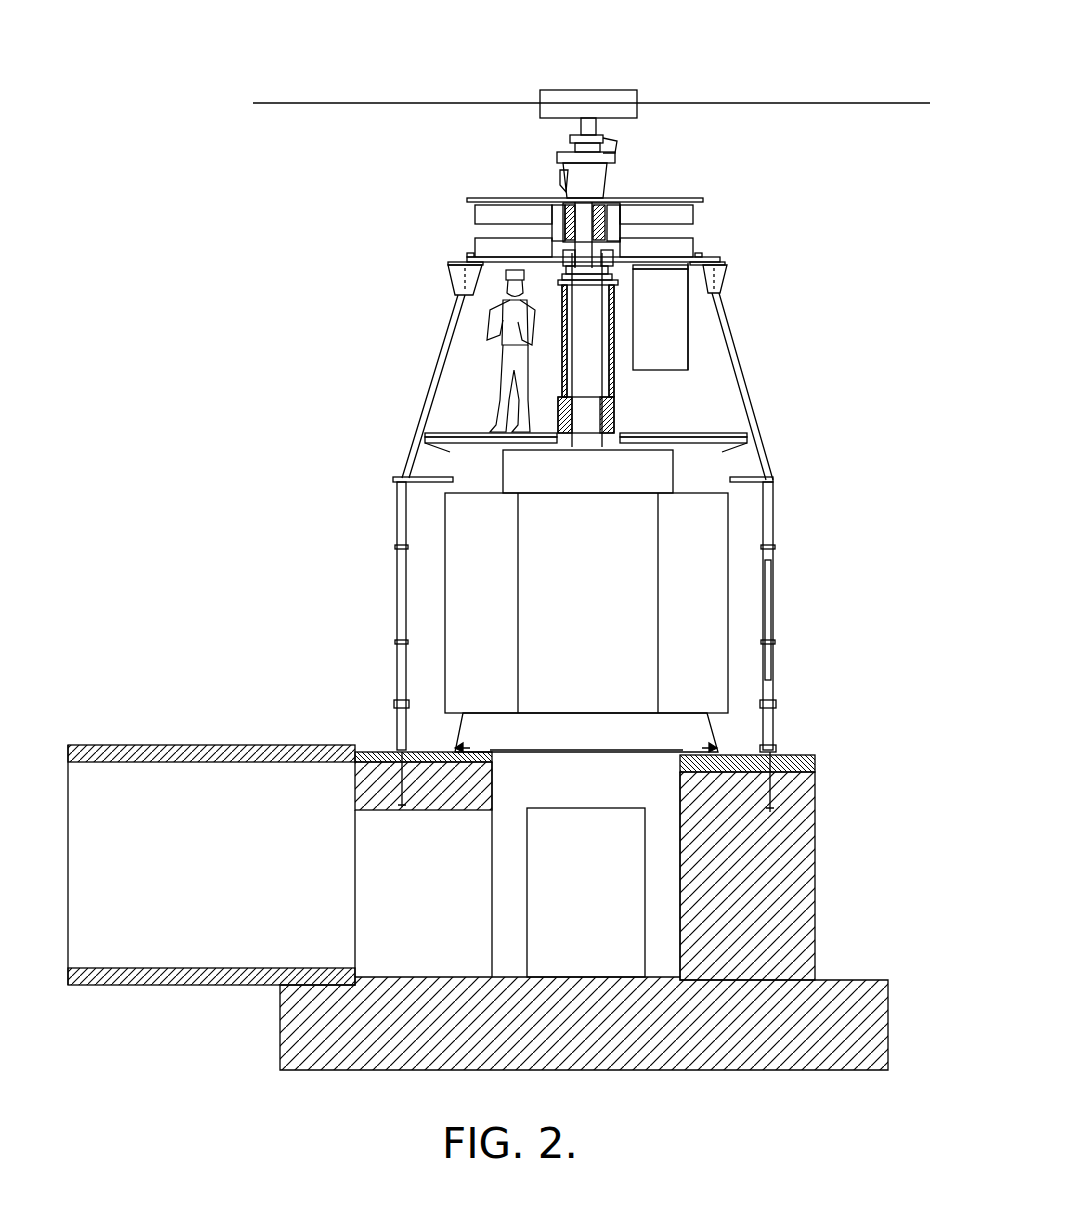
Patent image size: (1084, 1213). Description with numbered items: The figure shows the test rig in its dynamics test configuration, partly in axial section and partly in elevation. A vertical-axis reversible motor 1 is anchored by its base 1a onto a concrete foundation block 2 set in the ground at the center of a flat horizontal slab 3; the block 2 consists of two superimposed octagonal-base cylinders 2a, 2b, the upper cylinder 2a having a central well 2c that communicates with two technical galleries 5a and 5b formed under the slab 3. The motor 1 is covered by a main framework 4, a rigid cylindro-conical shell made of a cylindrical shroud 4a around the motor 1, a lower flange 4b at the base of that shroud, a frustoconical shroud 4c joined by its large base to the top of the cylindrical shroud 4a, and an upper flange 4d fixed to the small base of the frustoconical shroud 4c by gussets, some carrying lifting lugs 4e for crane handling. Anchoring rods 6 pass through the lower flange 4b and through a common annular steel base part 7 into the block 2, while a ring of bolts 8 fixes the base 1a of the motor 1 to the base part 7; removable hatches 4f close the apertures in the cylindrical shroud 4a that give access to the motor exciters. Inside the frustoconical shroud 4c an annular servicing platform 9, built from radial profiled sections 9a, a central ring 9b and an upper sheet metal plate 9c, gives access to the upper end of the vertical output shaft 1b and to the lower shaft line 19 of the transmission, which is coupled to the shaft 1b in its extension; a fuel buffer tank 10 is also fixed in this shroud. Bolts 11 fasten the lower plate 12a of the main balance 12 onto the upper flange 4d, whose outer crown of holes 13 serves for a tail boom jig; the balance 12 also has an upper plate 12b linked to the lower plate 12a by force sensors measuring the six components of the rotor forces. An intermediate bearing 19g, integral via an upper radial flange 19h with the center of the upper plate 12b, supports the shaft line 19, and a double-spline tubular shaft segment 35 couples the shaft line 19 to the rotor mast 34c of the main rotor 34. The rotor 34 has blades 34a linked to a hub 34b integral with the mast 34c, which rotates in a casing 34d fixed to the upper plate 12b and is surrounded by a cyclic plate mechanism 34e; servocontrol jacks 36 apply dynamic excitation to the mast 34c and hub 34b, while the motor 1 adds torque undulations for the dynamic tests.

The reversible motor 1 is at (700, 570).
The base 1a is at (540, 733).
The vertical output shaft 1b is at (585, 437).
The foundation block 2 is at (505, 907).
The upper cylinder 2a is at (790, 862).
The lower cylinder 2b is at (860, 1013).
The central well 2c is at (663, 950).
The slab 3 is at (225, 748).
The main framework 4 is at (601, 552).
The cylindrical shroud 4a is at (772, 630).
The lower flange 4b is at (782, 745).
The frustoconical shroud 4c is at (750, 410).
The upper flange 4d is at (720, 268).
The lifting lugs 4e is at (452, 282).
The removable hatches 4f is at (770, 517).
The technical gallery 5a is at (402, 896).
The technical gallery 5b is at (568, 896).
The anchoring rods 6 is at (775, 790).
The base part 7 is at (393, 745).
The bolts 8 is at (463, 745).
The servicing platform 9 is at (558, 430).
The profiled sections 9a is at (478, 443).
The central ring 9b is at (560, 445).
The upper sheet metal plate 9c is at (462, 437).
The buffer tank 10 is at (672, 300).
The bolts 11 is at (698, 255).
The main balance 12 is at (518, 218).
The lower plate 12a is at (476, 243).
The upper plate 12b is at (470, 210).
The outer crown of holes 13 is at (452, 257).
The lower shaft line 19 is at (560, 334).
The intermediate bearing 19g is at (618, 220).
The upper radial flange 19h is at (555, 201).
The main rotor 34 is at (591, 105).
The blades 34a is at (790, 103).
The hub 34b is at (598, 96).
The rotor mast 34c is at (605, 117).
The casing 34d is at (590, 182).
The cyclic plate mechanism 34e is at (618, 150).
The tubular shaft segment 35 is at (622, 205).
The servocontrol jacks 36 is at (565, 188).